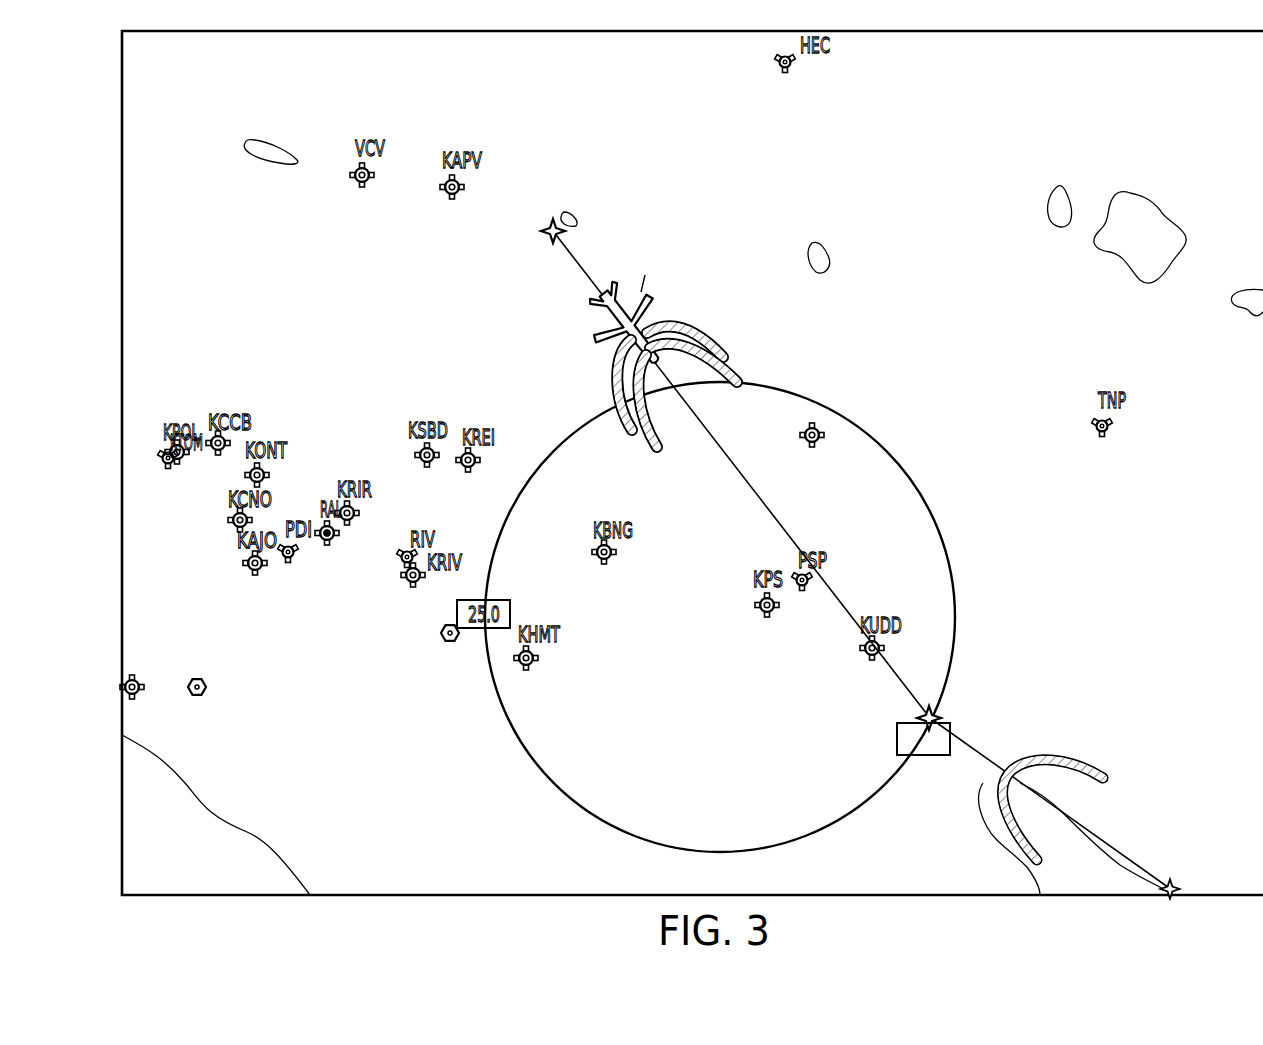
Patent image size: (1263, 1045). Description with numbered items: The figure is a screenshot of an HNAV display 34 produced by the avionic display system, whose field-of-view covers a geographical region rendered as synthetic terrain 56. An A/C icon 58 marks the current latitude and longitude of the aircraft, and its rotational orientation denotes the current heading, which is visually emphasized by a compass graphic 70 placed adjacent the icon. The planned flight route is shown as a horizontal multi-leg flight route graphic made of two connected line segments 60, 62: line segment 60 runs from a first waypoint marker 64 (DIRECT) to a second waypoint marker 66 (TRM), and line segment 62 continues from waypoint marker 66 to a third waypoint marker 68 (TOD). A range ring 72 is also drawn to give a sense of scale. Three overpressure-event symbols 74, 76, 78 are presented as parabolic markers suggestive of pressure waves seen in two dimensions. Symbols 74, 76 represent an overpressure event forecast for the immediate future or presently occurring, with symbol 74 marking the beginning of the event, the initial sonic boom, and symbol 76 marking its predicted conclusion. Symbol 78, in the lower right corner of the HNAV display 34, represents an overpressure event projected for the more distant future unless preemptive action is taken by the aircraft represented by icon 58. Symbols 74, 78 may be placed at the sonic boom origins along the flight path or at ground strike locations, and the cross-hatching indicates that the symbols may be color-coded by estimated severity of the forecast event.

The HNAV display 34 is at (127, 160).
The synthetic terrain 56 is at (1183, 126).
The A/C icon 58 is at (600, 337).
The line segment 60 is at (720, 450).
The line segment 62 is at (975, 748).
The first waypoint marker 64 is at (545, 238).
The second waypoint marker 66 is at (918, 718).
The third waypoint marker 68 is at (1183, 893).
The compass graphic 70 is at (652, 280).
The range ring 72 is at (953, 612).
The symbol 74 is at (708, 340).
The symbol 76 is at (738, 372).
The symbol 78 is at (1053, 760).